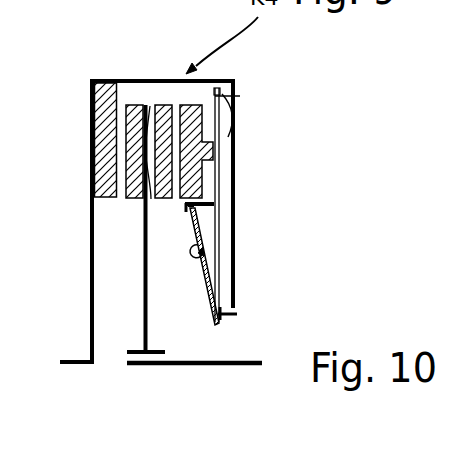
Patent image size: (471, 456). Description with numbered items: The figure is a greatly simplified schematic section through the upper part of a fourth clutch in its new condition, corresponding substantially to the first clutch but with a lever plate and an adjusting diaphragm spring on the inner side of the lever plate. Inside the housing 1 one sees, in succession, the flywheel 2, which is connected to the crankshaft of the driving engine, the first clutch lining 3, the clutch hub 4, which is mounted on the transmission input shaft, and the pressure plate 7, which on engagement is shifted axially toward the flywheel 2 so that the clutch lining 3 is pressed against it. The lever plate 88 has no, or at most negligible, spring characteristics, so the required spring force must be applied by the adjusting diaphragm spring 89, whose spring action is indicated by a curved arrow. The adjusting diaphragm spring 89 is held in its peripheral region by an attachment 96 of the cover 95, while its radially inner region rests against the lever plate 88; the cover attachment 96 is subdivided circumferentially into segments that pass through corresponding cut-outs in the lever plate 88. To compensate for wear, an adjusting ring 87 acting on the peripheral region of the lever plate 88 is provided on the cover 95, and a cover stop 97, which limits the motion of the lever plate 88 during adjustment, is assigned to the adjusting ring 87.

The housing 1 is at (92, 252).
The flywheel 2 is at (105, 152).
The first clutch lining 3 is at (131, 127).
The clutch hub 4 is at (146, 294).
The pressure plate 7 is at (188, 117).
The adjusting ring 87 is at (237, 113).
The lever plate 88 is at (203, 261).
The adjusting diaphragm spring 89 is at (197, 224).
The cover 95 is at (237, 243).
The attachment 96 is at (190, 202).
The cover stop 97 is at (222, 314).